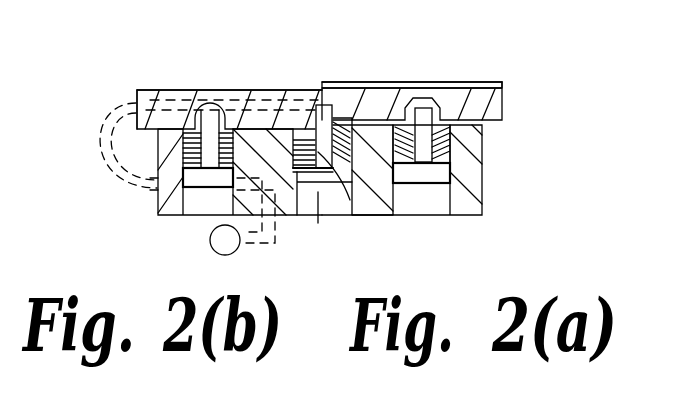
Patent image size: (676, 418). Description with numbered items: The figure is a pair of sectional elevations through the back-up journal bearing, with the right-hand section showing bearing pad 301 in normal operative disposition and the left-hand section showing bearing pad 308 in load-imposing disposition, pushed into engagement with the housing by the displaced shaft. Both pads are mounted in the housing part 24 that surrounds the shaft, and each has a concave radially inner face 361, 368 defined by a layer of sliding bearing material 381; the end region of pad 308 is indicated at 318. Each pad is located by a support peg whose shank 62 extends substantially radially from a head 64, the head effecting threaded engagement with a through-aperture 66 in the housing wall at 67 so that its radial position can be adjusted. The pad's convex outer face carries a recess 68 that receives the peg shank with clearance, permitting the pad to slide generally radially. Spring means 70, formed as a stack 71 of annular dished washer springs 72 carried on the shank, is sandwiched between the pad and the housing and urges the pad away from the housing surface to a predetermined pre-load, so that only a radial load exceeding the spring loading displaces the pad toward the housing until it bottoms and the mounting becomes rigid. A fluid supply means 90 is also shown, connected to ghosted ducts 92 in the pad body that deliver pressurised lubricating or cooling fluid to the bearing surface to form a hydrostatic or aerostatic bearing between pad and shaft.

In FIG. 2B, the arcuate bearing pad 308 is at (257, 115).
In FIG. 2B, the end of first slide plate 318 is at (137, 91).
In FIG. 2B, the radially inner face 368 is at (166, 90).
In FIG. 2A, the arcuate bearing pad 301 is at (494, 108).
In FIG. 2A, the radially inner face 361 is at (455, 82).
In FIG. 2A, the layer of sliding bearing material 381 is at (502, 82).
In FIG. 2A, the housing part 24 is at (483, 194).
In FIG. 2A, the shank 62 is at (355, 133).
In FIG. 2B, the head 64 is at (296, 176).
In FIG. 2A, the through-aperture 66 is at (342, 198).
In FIG. 2A, the housing wall 67 is at (483, 215).
In FIG. 2B, the recess 68 is at (327, 104).
In FIG. 2A, the recess 68 is at (430, 97).
In FIG. 2A, the spring means 70 is at (360, 128).
In FIG. 2A, the stack of annular dished washer springs 71 is at (376, 188).
In FIG. 2B, the annular dished washer spring 72 is at (309, 138).
In FIG. 2A, the annular dished washer spring 72 is at (422, 165).
In FIG. 2B, the fluid supply means 90 is at (212, 243).
In FIG. 2B, the duct 92 is at (112, 121).